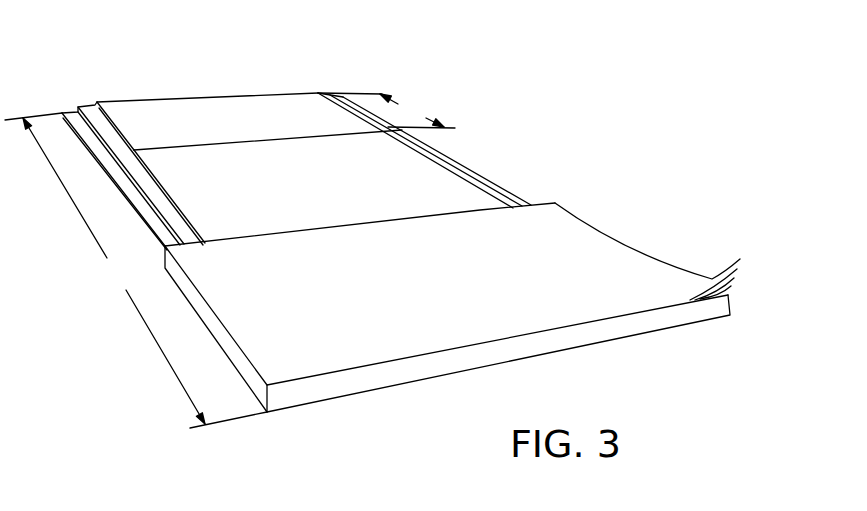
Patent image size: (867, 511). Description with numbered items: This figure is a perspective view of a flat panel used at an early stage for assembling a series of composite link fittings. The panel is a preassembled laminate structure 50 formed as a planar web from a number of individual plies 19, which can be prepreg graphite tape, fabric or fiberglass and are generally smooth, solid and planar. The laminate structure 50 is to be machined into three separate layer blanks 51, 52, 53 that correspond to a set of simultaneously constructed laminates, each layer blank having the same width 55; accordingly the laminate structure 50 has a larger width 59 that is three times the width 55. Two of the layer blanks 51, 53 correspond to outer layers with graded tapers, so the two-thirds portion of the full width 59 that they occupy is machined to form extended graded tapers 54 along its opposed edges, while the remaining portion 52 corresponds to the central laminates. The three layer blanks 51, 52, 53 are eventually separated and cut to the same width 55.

The preassembled laminate structure 50 is at (492, 158).
The layer blank 51 is at (249, 121).
The layer blank 52 is at (447, 307).
The layer blank 53 is at (215, 176).
The extended graded taper 54 is at (107, 132).
The width 55 is at (386, 110).
The width 59 is at (136, 270).
The ply 19 is at (715, 278).